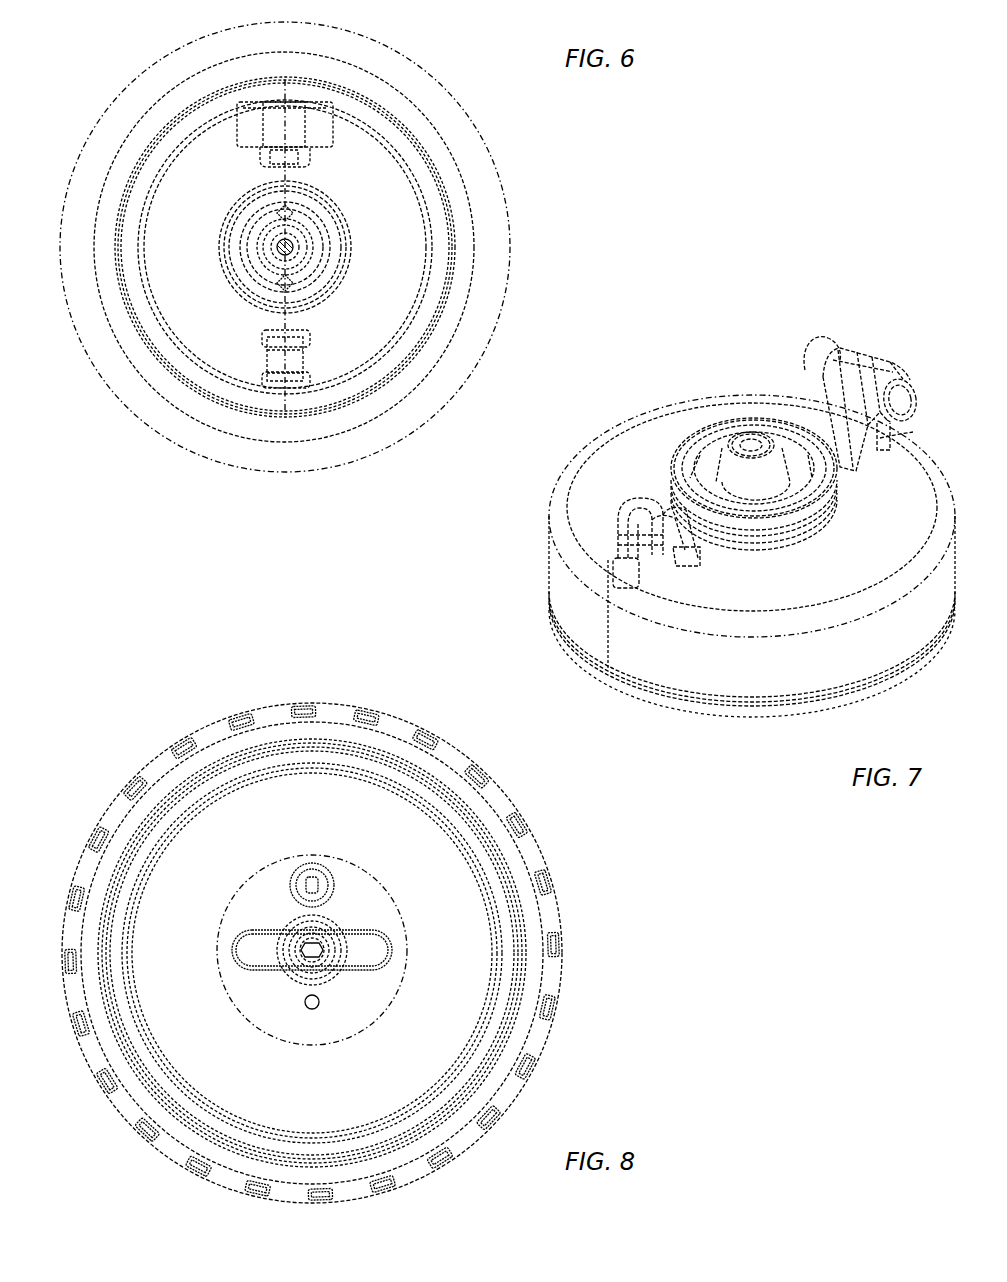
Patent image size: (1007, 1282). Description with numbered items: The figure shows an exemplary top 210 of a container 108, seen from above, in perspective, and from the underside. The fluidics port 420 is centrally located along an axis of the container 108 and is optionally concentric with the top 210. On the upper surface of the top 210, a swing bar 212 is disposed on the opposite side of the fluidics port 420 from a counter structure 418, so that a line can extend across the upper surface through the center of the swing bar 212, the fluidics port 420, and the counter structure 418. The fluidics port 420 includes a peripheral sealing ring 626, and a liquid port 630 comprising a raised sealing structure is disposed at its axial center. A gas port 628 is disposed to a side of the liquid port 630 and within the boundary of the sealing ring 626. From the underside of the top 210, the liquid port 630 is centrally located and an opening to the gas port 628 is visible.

In FIG. 6, the container 108 is at (463, 167).
In FIG. 6, the top 210 is at (413, 237).
In FIG. 7, the top 210 is at (705, 678).
In FIG. 8, the top 210 is at (277, 703).
In FIG. 6, the swing bar 212 is at (292, 116).
In FIG. 7, the swing bar 212 is at (838, 350).
In FIG. 6, the counter structure 418 is at (285, 373).
In FIG. 7, the counter structure 418 is at (635, 567).
In FIG. 6, the fluidics port 420 is at (242, 200).
In FIG. 7, the fluidics port 420 is at (712, 448).
In FIG. 6, the peripheral sealing ring 626 is at (233, 243).
In FIG. 7, the peripheral sealing ring 626 is at (690, 467).
In FIG. 6, the gas port 628 is at (277, 290).
In FIG. 8, the gas port 628 is at (313, 1008).
In FIG. 6, the liquid port 630 is at (297, 253).
In FIG. 7, the liquid port 630 is at (757, 443).
In FIG. 8, the liquid port 630 is at (317, 950).